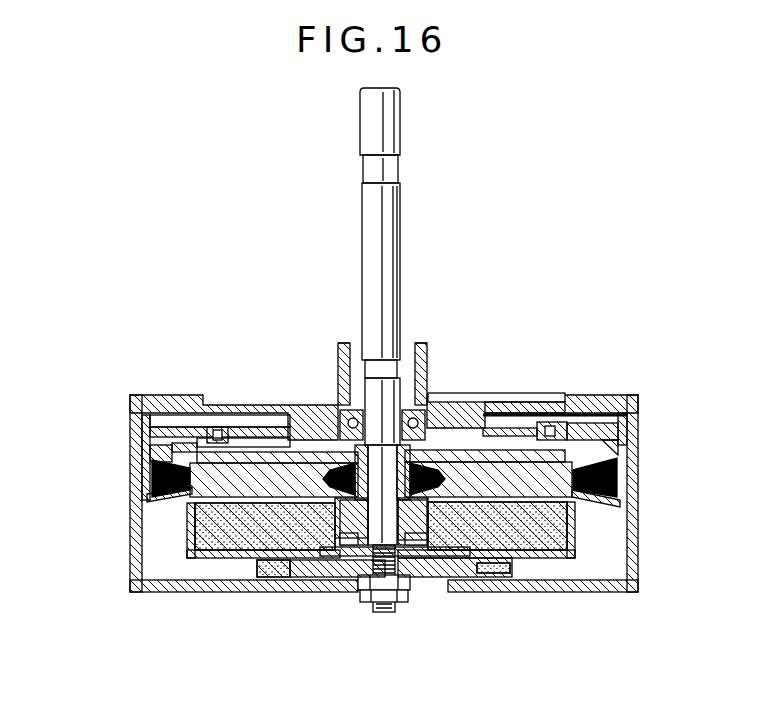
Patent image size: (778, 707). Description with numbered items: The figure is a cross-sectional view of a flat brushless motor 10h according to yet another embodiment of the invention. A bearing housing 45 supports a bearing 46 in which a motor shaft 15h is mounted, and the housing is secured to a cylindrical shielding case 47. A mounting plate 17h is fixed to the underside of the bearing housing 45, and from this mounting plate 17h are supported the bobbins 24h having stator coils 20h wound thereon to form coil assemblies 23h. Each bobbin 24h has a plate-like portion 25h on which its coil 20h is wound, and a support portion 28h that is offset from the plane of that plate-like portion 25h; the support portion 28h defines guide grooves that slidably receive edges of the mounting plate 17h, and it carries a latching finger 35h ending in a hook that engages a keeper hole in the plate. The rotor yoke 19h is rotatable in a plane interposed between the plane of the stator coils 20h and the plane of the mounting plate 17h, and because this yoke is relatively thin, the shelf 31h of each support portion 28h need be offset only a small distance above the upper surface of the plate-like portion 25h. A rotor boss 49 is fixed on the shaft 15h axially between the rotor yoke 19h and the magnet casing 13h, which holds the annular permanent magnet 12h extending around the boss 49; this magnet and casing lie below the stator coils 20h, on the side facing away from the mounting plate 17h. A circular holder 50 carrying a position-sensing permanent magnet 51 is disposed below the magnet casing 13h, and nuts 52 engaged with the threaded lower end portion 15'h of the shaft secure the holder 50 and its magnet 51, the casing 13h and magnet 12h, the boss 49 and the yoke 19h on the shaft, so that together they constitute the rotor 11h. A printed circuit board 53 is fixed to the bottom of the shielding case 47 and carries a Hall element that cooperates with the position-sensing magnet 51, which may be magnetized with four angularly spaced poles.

The motor 10h is at (513, 325).
The rotor 11h is at (592, 554).
The annular permanent magnet 12h is at (548, 552).
The magnet casing 13h is at (540, 555).
The motor shaft 15h is at (400, 218).
The threaded lower end portion 15'h is at (413, 610).
The mounting plate 17h is at (518, 426).
The rotor yoke 19h is at (260, 447).
The stator coils 20h is at (157, 472).
The coil assemblies 23h is at (153, 490).
The bobbins 24h is at (307, 460).
The plate-like portion 25h is at (243, 470).
The support portion 28h is at (148, 432).
The shelf 31h is at (193, 445).
The latching finger 35h is at (175, 435).
The bearing housing 45 is at (427, 345).
The bearing 46 is at (429, 397).
The cylindrical shielding case 47 is at (503, 407).
The rotor boss 49 is at (420, 545).
The circular holder 50 is at (342, 577).
The position-sensing permanent magnet 51 is at (272, 577).
The nuts 52 is at (378, 615).
The printed circuit board 53 is at (192, 592).